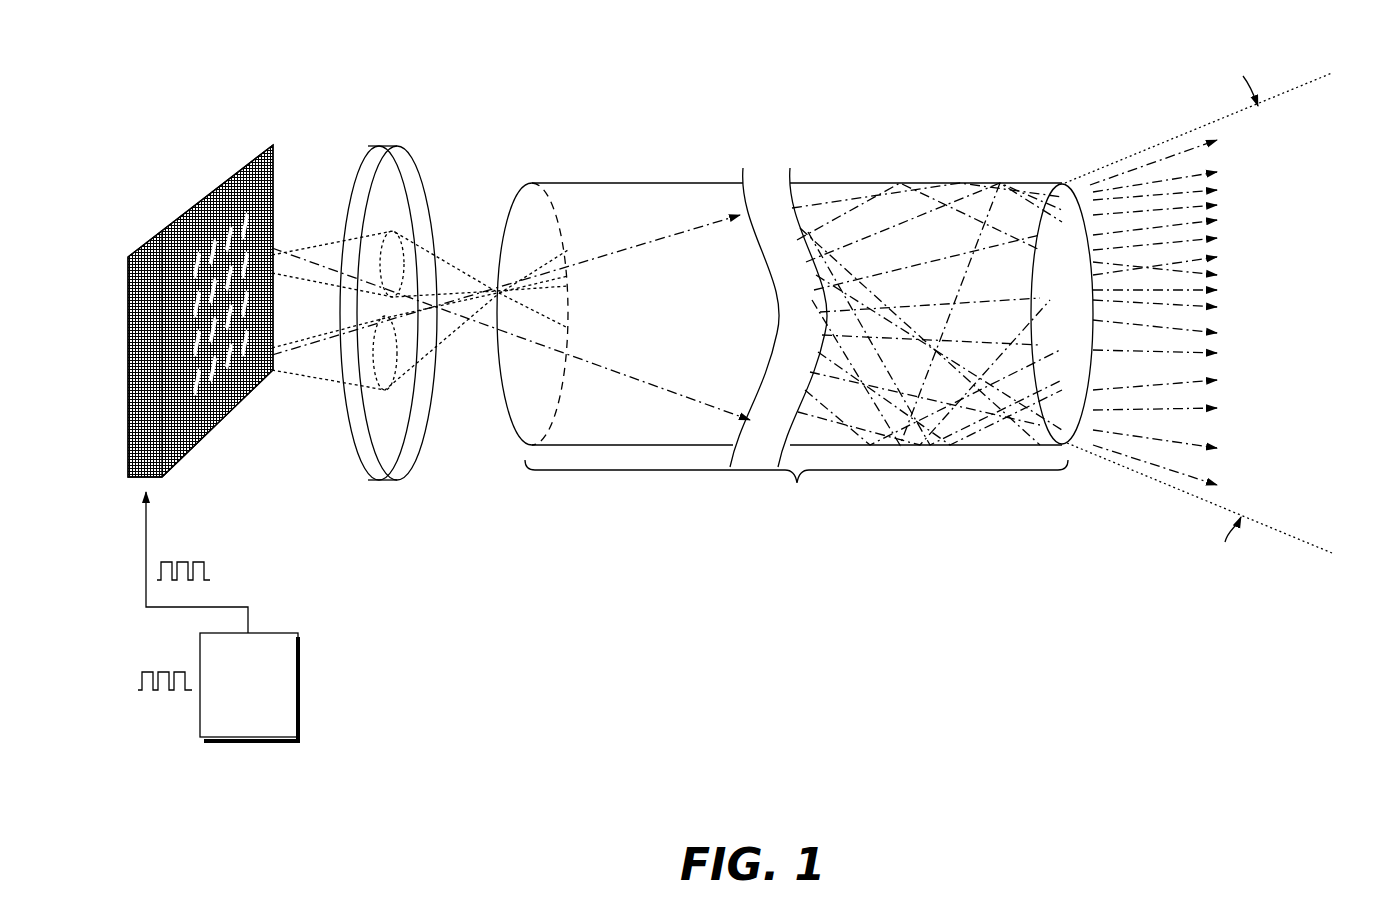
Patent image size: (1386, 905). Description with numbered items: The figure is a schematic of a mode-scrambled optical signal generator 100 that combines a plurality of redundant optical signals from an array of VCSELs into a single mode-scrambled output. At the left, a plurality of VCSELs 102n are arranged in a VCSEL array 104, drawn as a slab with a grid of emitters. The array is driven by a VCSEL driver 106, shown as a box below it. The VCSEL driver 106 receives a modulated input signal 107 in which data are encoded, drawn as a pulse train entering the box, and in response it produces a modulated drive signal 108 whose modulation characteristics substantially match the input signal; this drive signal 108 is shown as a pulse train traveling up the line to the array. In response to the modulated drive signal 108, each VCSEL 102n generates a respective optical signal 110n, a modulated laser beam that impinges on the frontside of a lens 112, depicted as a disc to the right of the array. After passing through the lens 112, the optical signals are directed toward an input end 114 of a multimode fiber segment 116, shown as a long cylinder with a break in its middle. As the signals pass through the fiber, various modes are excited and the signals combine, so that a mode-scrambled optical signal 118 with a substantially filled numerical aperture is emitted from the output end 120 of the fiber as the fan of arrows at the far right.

The mode-scrambled optical signal generator 100 is at (942, 700).
The VCSEL 102n is at (228, 422).
The VCSEL array 104 is at (228, 324).
The VCSEL driver 106 is at (270, 728).
The modulated input signal 107 is at (165, 694).
The modulated drive signal 108 is at (146, 552).
The optical signal 110n is at (312, 255).
The lens 112 is at (405, 470).
The input end 114 is at (510, 212).
The multimode fiber segment 116 is at (766, 330).
The mode-scrambled optical signal 118 is at (1164, 504).
The output end 120 is at (1088, 437).